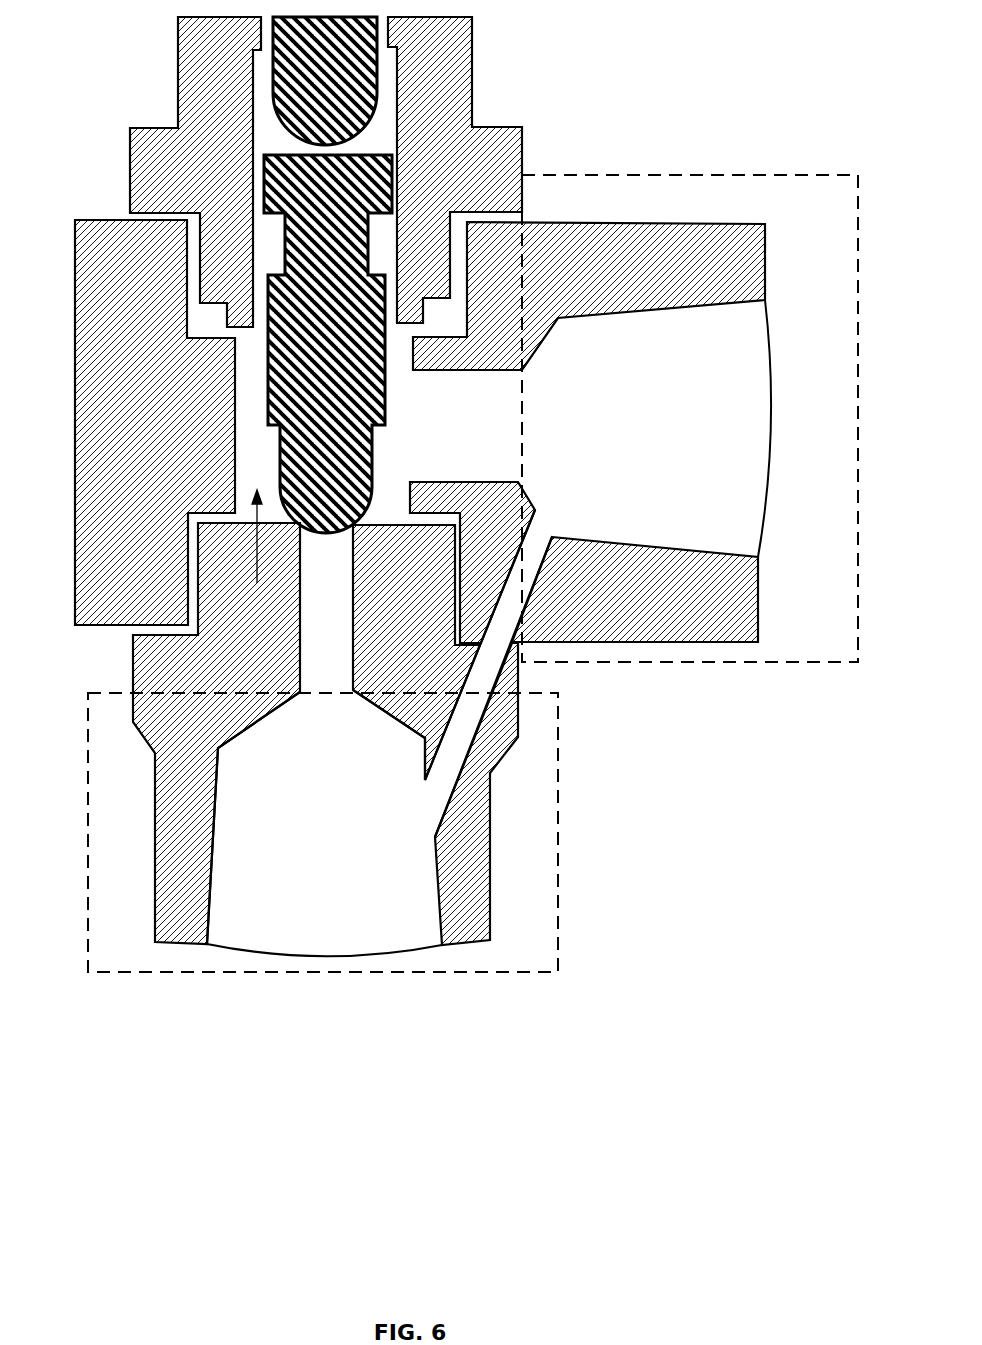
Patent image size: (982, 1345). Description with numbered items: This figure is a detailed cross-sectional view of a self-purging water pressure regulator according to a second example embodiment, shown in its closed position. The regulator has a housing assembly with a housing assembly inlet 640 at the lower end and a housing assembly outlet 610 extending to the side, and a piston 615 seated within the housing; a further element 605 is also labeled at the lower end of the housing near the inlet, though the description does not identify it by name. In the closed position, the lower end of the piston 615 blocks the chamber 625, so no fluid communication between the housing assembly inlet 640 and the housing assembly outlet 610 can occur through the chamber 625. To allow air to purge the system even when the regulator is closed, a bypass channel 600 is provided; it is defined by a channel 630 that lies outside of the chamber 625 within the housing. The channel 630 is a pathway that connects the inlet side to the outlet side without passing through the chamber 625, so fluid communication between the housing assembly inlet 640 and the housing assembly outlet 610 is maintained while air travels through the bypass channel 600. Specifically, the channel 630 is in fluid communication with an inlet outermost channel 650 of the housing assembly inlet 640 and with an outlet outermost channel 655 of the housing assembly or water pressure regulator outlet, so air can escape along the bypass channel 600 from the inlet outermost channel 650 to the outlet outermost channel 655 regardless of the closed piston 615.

The bypass channel 600 is at (432, 807).
The outlet 605 is at (427, 952).
The housing assembly outlet 610 is at (720, 402).
The piston 615 is at (293, 193).
The chamber 625 is at (257, 583).
The channel 630 is at (490, 653).
The housing assembly inlet 640 is at (332, 928).
The inlet outermost channel 650 is at (543, 972).
The outlet outermost channel 655 is at (730, 663).